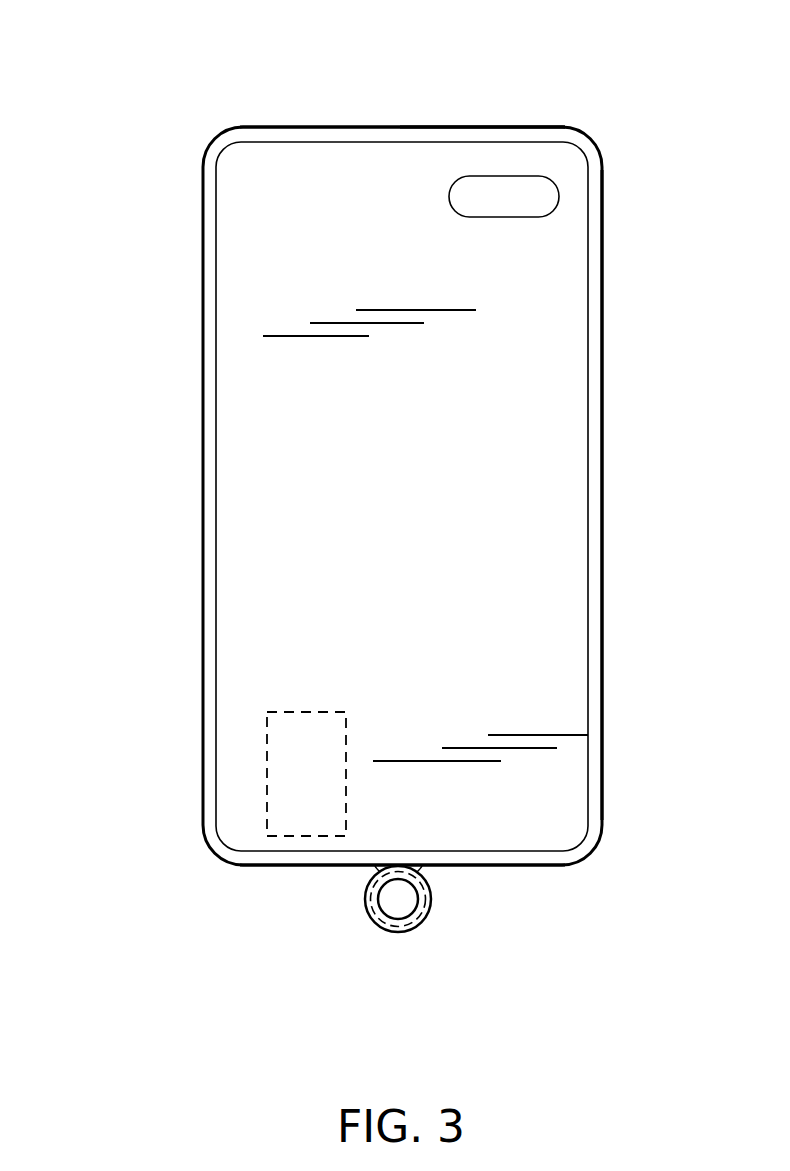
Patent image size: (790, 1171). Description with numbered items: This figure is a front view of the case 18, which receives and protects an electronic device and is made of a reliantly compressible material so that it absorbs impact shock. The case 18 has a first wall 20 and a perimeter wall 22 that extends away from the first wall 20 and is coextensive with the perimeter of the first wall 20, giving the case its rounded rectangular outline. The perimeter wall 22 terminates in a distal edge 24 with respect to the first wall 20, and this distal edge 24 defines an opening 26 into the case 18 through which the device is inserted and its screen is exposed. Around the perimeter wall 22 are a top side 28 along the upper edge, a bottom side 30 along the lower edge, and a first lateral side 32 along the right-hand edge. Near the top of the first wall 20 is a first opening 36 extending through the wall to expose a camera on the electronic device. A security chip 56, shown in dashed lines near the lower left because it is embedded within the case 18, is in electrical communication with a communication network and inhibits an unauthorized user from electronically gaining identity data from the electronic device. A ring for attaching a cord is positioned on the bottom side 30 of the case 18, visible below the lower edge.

The case 18 is at (218, 122).
The first wall 20 is at (390, 165).
The perimeter wall 22 is at (602, 222).
The distal edge 24 is at (210, 357).
The opening 26 is at (252, 237).
The top side 28 is at (482, 132).
The bottom side 30 is at (311, 866).
The first lateral side 32 is at (602, 563).
The first opening 36 is at (525, 193).
The security chip 56 is at (267, 742).